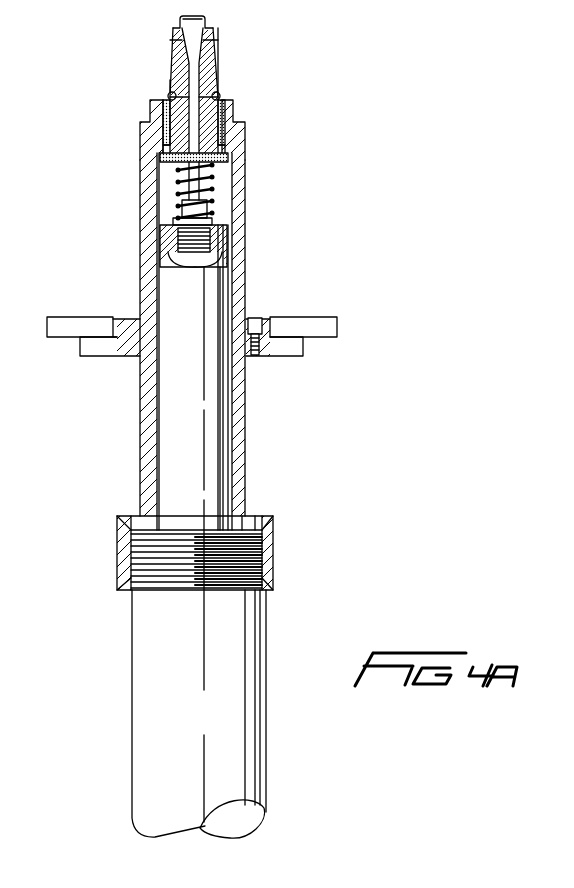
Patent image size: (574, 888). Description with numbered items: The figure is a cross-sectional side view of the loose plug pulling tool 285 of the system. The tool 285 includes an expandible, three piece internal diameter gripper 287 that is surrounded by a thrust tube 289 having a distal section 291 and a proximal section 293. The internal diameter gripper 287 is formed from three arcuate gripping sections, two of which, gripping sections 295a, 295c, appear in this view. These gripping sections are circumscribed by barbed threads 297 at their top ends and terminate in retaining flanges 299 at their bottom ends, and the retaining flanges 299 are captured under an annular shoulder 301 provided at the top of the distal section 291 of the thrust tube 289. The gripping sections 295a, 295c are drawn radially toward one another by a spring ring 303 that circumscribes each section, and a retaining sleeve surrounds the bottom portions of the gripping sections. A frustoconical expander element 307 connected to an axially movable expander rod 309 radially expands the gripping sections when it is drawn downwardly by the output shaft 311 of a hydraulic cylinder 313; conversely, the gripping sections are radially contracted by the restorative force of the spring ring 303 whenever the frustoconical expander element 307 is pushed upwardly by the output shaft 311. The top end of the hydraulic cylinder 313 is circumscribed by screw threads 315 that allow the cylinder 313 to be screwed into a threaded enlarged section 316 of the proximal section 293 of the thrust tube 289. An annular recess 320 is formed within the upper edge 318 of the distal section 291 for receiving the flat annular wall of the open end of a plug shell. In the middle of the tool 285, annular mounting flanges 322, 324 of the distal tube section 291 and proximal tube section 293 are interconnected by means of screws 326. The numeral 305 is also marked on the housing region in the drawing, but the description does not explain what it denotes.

The loose plug pulling tool 285 is at (86, 69).
The frustoconical expander element 307 is at (182, 40).
The barbed threads 297 is at (214, 42).
The internal diameter gripper 287 is at (214, 74).
The arcuate gripping section 295a is at (172, 74).
The arcuate gripping section 295c is at (217, 89).
The spring ring 303 is at (163, 99).
The housing right portion 305 is at (246, 128).
The upper edge 318 is at (160, 104).
The annular recess 320 is at (226, 102).
The expander rod 309 is at (160, 147).
The annular shoulder 301 is at (225, 143).
The retaining flanges 299 is at (246, 158).
The thrust tube 289 is at (246, 212).
The distal section 291 is at (240, 247).
The output shaft 311 is at (207, 392).
The proximal section 293 is at (242, 447).
The annular mounting flange 322 is at (130, 323).
The annular mounting flange 324 is at (130, 350).
The screws 326 is at (255, 318).
The screw threads 315 is at (133, 553).
The threaded enlarged section 316 is at (267, 553).
The hydraulic cylinder 313 is at (218, 725).